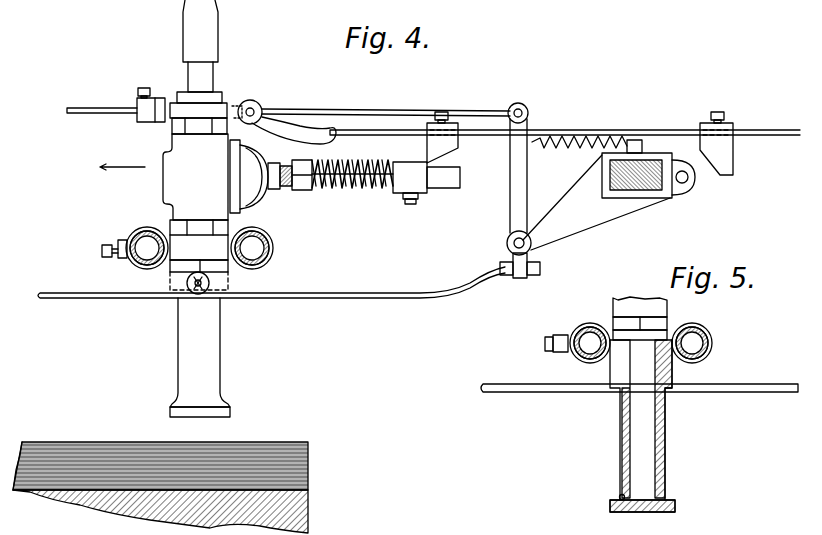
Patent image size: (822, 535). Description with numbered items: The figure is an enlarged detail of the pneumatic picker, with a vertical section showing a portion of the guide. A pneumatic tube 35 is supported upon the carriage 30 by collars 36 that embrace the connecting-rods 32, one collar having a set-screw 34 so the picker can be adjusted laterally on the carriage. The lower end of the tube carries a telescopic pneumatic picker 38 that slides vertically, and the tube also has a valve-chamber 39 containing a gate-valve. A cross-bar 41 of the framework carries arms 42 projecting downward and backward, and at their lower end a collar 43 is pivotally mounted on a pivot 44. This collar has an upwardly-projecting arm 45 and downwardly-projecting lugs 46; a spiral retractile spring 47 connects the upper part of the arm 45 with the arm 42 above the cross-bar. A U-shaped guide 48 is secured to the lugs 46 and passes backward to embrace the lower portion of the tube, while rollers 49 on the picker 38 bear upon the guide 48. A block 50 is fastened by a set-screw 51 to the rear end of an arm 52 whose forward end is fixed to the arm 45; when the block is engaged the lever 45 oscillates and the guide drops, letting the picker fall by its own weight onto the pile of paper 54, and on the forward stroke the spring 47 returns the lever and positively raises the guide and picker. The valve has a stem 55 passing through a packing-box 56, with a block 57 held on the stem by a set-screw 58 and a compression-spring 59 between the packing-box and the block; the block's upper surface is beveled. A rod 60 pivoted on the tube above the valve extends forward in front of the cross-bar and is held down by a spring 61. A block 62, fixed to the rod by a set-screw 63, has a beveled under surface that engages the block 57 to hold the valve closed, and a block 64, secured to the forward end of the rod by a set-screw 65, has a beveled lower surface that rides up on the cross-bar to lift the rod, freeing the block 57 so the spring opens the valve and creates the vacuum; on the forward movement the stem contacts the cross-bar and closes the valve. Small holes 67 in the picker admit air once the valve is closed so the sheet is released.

In FIG. 5, the carriage 30 is at (676, 272).
In FIG. 4, the connecting-rods 32 is at (134, 236).
In FIG. 5, the connecting-rods 32 is at (587, 328).
In FIG. 4, the set-screw 34 is at (100, 250).
In FIG. 5, the set-screw 34 is at (544, 343).
In FIG. 5, the pneumatic tubes 35 is at (641, 420).
In FIG. 4, the collars 36 is at (132, 259).
In FIG. 5, the collars 36 is at (573, 330).
In FIG. 4, the telescopic pneumatic pickers 38 is at (200, 357).
In FIG. 5, the telescopic pneumatic pickers 38 is at (667, 458).
In FIG. 4, the valve-chamber 39 is at (195, 110).
In FIG. 4, the cross-bar 41 is at (648, 182).
In FIG. 4, the arms 42 is at (562, 197).
In FIG. 4, the collar 43 is at (506, 243).
In FIG. 4, the pivot 44 is at (548, 247).
In FIG. 4, the upwardly-projecting arm 45 is at (511, 192).
In FIG. 4, the downwardly-projecting lugs 46 is at (524, 278).
In FIG. 4, the spiral retractile spring 47 is at (580, 148).
In FIG. 4, the U-shaped guide 48 is at (356, 300).
In FIG. 5, the U-shaped guide 48 is at (526, 392).
In FIG. 4, the rollers 49 is at (190, 292).
In FIG. 4, the block 50 is at (148, 118).
In FIG. 4, the set-screw 51 is at (140, 89).
In FIG. 4, the arm 52 is at (366, 108).
In FIG. 4, the pile of paper 54 is at (96, 441).
In FIG. 4, the valve-stem 55 is at (361, 175).
In FIG. 4, the packing-box 56 is at (305, 190).
In FIG. 4, the block 57 is at (426, 177).
In FIG. 4, the set-screw 58 is at (410, 205).
In FIG. 4, the compression-spring 59 is at (345, 168).
In FIG. 4, the rod 60 is at (494, 136).
In FIG. 4, the spring 61 is at (272, 116).
In FIG. 4, the block 62 is at (430, 147).
In FIG. 4, the set-screw 63 is at (441, 110).
In FIG. 4, the block 64 is at (732, 152).
In FIG. 4, the set-screw 65 is at (718, 110).
In FIG. 5, the small holes 67 is at (618, 496).